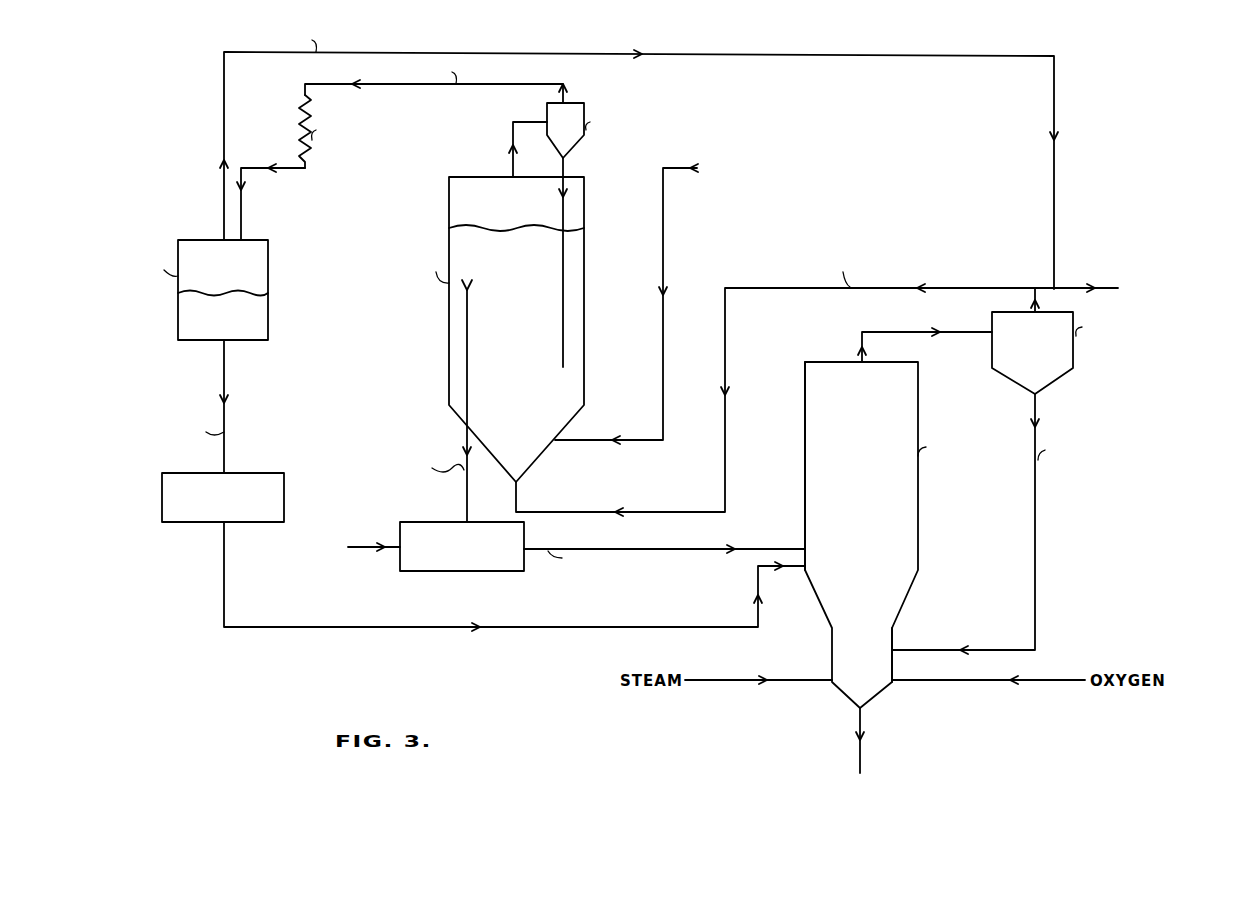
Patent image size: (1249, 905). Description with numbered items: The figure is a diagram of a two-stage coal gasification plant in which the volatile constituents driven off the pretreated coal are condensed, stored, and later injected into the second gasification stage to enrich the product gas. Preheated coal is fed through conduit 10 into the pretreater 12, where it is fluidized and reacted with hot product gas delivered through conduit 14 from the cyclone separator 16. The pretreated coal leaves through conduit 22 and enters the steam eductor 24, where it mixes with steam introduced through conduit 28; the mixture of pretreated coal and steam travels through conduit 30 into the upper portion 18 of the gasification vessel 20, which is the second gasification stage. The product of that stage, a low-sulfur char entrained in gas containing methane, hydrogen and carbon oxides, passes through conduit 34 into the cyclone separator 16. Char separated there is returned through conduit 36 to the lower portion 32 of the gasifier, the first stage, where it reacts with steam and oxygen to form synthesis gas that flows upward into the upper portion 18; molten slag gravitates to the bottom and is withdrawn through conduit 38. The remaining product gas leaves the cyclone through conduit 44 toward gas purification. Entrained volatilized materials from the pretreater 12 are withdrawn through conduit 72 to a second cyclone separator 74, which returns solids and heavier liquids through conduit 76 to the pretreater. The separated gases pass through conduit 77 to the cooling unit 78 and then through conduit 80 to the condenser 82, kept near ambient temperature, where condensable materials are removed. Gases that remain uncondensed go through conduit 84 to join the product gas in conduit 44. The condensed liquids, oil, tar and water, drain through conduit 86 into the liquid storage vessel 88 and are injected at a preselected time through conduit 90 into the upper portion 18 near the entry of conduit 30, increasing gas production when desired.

The conduit 10 is at (656, 301).
The pretreating reactor vessel 12 is at (477, 329).
The conduit 14 is at (882, 379).
The cyclone separator 16 is at (1092, 353).
The upper portion of gasification vessel 18 is at (786, 466).
The gasification vessel 20 is at (908, 535).
The conduit 22 is at (425, 401).
The steam eductor 24 is at (462, 560).
The conduit 28 is at (345, 538).
The conduit 30 is at (664, 558).
The lower portion of gasification vessel 32 is at (907, 653).
The conduit 34 is at (925, 334).
The conduit 36 is at (1010, 524).
The conduit 38 is at (869, 751).
The conduit 44 is at (1057, 288).
The conduit 72 is at (516, 149).
The cyclone separator 74 is at (623, 130).
The conduit 76 is at (591, 258).
The conduit 77 is at (436, 85).
The cooling unit 78 is at (332, 131).
The conduit 80 is at (271, 202).
The condenser 82 is at (165, 290).
The conduit 84 is at (626, 160).
The conduit 86 is at (160, 406).
The vessel 88 is at (209, 497).
The conduit 90 is at (514, 587).